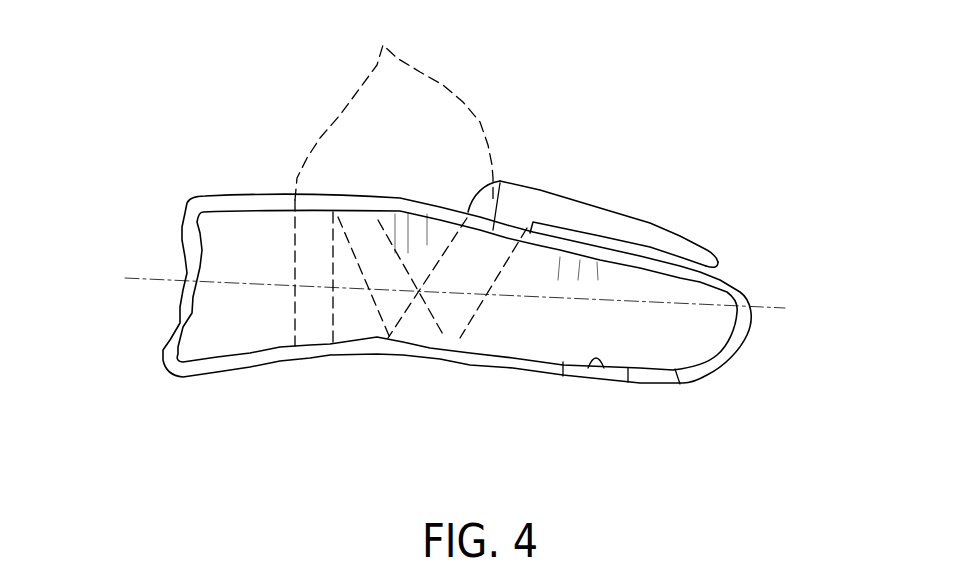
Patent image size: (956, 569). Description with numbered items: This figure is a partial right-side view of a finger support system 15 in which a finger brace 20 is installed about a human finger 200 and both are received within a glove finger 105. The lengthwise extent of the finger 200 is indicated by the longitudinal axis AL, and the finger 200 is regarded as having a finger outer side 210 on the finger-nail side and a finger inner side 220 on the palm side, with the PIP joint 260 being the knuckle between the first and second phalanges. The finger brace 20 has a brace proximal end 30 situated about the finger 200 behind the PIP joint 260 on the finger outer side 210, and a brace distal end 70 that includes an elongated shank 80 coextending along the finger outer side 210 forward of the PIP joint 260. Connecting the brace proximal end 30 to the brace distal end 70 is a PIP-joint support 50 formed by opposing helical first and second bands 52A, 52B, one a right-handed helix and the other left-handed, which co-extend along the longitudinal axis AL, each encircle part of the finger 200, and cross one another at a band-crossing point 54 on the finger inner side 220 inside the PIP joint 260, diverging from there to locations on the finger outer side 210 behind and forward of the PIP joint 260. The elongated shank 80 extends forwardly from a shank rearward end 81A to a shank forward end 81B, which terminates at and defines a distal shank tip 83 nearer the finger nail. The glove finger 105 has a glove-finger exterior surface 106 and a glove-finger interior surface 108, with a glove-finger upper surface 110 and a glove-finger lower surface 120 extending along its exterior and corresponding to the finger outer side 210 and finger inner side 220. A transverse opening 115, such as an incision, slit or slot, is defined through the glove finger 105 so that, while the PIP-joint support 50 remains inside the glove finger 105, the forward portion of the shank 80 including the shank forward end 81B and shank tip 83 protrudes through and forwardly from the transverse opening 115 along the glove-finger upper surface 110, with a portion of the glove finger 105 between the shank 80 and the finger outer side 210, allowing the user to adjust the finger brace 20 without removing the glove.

The finger support system 15 is at (286, 91).
The finger brace 20 is at (461, 255).
The brace proximal end 30 is at (292, 212).
The PIP-joint support 50 is at (383, 46).
The helical first band 52A is at (388, 310).
The helical second band 52B is at (457, 311).
The band-crossing point 54 is at (424, 345).
The brace distal end 70 is at (502, 178).
The elongated shank 80 is at (591, 222).
The shank rearward end 81A is at (503, 180).
The shank forward end 81B is at (705, 250).
The distal shank tip 83 is at (719, 263).
The glove finger 105 is at (510, 368).
The glove-finger exterior surface 106 is at (632, 380).
The glove-finger interior surface 108 is at (601, 370).
The glove-finger upper surface 110 is at (677, 262).
The transverse opening 115 is at (505, 182).
The glove-finger lower surface 120 is at (680, 385).
The human finger 200 is at (588, 334).
The finger outer side 210 is at (612, 260).
The finger inner side 220 is at (563, 365).
The PIP joint 260 is at (418, 240).
The longitudinal axis AL is at (470, 304).